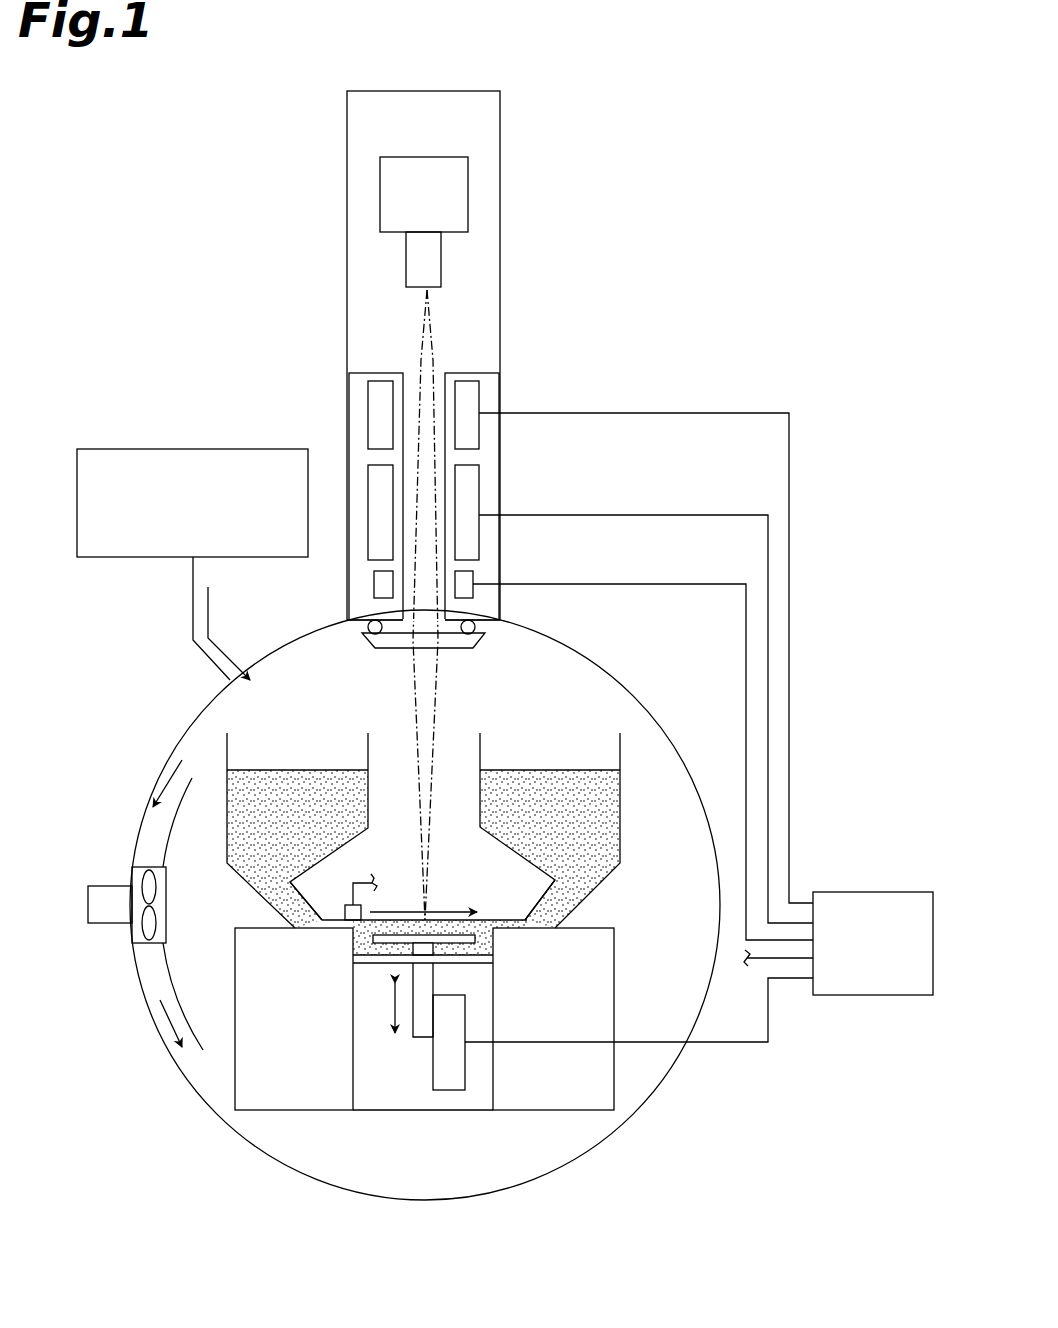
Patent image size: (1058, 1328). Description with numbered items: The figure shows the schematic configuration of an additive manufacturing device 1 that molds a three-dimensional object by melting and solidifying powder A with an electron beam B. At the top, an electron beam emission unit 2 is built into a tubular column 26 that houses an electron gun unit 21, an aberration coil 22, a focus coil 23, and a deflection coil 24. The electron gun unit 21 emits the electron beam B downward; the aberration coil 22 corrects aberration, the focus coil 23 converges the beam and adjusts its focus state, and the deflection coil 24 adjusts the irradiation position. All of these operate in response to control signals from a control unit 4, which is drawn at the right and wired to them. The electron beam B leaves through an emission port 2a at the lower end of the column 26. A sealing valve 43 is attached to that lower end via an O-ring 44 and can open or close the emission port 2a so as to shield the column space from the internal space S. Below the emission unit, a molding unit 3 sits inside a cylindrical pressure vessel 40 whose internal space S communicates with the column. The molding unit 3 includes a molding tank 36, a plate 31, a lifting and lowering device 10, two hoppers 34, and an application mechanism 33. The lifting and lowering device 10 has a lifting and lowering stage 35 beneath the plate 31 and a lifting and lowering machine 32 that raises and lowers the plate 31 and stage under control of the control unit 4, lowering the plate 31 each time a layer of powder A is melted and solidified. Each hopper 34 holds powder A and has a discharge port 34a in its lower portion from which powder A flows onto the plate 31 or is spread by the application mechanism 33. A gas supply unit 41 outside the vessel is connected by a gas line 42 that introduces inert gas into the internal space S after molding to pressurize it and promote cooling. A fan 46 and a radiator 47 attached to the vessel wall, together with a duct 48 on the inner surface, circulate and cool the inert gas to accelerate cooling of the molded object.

The additive manufacturing device 1 is at (675, 137).
The electron beam emission unit 2 is at (347, 108).
The column 26 is at (347, 145).
The electron gun unit 21 is at (380, 183).
The aberration coil 22 is at (479, 395).
The focus coil 23 is at (479, 478).
The deflection coil 24 is at (473, 572).
The emission port 2a is at (418, 625).
The control unit 4 is at (862, 892).
The gas supply unit 41 is at (196, 449).
The gas line 42 is at (193, 607).
The pressure vessel 40 is at (193, 723).
The internal space S is at (330, 713).
The O-ring 44 is at (475, 628).
The sealing valve 43 is at (478, 645).
The electron beam B is at (433, 698).
The hopper 34 is at (368, 795).
The discharge port 34a is at (302, 928).
The lifting and lowering device 10 is at (412, 1077).
The plate 31 is at (373, 937).
The lifting and lowering stage 35 is at (373, 963).
The molding tank 36 is at (495, 1003).
The lifting and lowering machine 32 is at (465, 1068).
The molding unit 3 is at (625, 1080).
The application mechanism 33 is at (345, 912).
The powder A is at (482, 935).
The duct 48 is at (163, 832).
The radiator 47 is at (135, 870).
The fan 46 is at (88, 905).